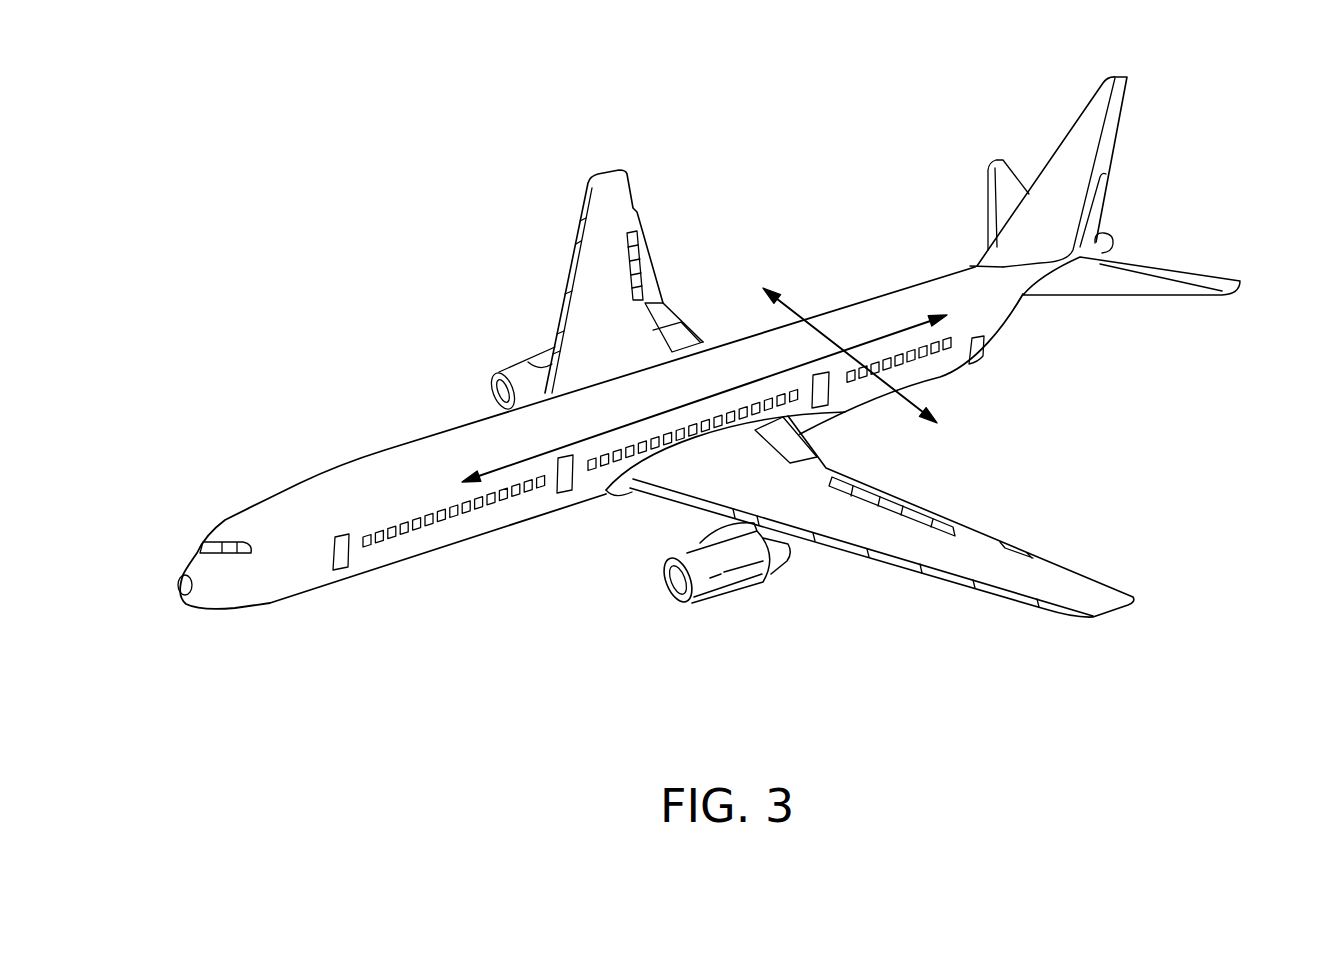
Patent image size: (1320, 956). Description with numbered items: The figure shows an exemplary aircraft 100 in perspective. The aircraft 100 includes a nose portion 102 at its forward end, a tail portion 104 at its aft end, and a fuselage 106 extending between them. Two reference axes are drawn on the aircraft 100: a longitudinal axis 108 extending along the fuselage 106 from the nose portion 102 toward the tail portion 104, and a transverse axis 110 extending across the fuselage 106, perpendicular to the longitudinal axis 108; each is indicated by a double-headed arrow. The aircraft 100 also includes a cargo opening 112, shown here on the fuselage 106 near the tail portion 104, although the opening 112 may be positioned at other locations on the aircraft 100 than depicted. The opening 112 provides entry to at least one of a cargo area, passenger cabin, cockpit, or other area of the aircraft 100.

The aircraft 100 is at (885, 214).
The nose portion 102 is at (178, 552).
The tail portion 104 is at (1127, 243).
The fuselage 106 is at (346, 463).
The longitudinal axis 108 is at (513, 463).
The transverse axis 110 is at (820, 328).
The cargo opening 112 is at (983, 345).